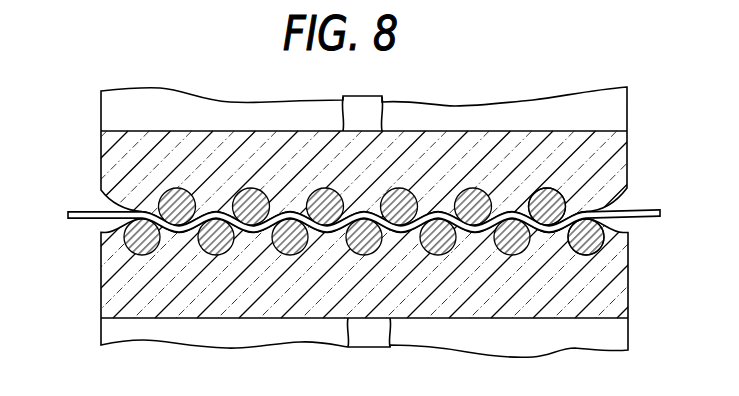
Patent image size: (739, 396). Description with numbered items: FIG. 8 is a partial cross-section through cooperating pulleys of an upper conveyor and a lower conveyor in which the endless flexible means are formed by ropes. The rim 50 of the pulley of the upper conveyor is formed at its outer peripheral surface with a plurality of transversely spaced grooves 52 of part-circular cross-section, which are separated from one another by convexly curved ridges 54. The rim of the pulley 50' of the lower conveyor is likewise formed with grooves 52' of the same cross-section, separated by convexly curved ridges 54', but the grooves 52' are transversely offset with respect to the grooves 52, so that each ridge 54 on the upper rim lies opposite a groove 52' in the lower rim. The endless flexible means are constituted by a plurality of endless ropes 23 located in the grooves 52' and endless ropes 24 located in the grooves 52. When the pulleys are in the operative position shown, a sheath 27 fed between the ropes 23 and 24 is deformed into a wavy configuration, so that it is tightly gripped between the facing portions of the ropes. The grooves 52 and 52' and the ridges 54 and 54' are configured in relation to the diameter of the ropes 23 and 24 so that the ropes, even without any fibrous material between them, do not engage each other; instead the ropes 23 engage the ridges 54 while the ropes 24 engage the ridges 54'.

The rim 50 is at (351, 147).
The pulley of the lower conveyor 50' is at (371, 290).
The endless rope 24 is at (388, 188).
The endless rope 23 is at (430, 249).
The groove 52 is at (559, 186).
The groove 52' is at (596, 260).
The ridge 54 is at (593, 191).
The ridge 54' is at (547, 256).
The sheath 27 is at (83, 212).